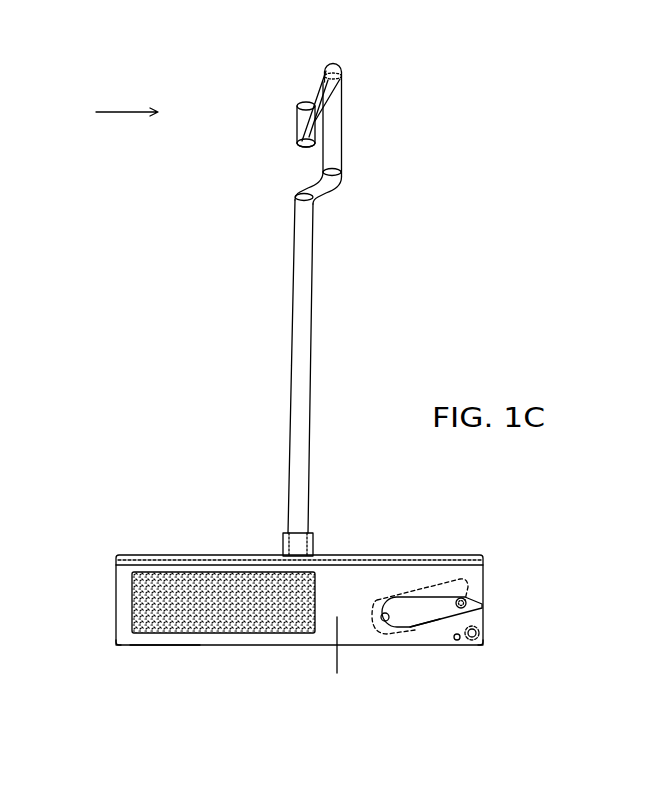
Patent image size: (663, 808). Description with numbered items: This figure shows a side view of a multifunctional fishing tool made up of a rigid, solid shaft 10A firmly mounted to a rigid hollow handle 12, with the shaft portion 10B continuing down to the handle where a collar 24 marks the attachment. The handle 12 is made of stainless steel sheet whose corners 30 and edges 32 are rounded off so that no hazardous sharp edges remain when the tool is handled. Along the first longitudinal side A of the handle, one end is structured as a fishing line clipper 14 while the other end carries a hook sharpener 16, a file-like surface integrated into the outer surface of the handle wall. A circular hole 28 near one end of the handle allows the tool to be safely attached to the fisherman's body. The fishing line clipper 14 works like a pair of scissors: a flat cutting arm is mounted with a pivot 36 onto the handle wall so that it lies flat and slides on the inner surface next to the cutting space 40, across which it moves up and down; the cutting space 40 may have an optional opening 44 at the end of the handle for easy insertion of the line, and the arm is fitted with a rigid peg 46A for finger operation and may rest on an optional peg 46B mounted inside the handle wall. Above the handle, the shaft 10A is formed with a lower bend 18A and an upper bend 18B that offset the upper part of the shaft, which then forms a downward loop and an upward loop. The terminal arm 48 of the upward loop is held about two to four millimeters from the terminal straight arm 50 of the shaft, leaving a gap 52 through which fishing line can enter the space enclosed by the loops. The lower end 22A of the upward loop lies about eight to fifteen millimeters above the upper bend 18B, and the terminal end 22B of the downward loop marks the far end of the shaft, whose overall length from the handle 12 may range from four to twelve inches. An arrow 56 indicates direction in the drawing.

The shaft 10A is at (302, 263).
The lower shaft portion 10B is at (298, 430).
The handle 12 is at (162, 528).
The fishing line clipper 14 is at (401, 573).
The hook sharpener 16 is at (242, 610).
The bend 18A is at (297, 194).
The upper bend 18B is at (338, 167).
The lower end of the upward loop 22A is at (303, 142).
The terminal end of the downward loop 22B is at (336, 63).
The shaft collar 24 is at (283, 541).
The circular hole 28 is at (484, 635).
The corners 30 is at (115, 644).
The edges 32 is at (163, 645).
The pivot 36 is at (383, 621).
The cutting space 40 is at (448, 620).
The opening 44 is at (476, 613).
The peg 46A is at (464, 602).
The peg 46B is at (457, 641).
The terminal arm 48 is at (298, 115).
The terminal straight arm 50 is at (338, 117).
The gap 52 is at (315, 100).
The direction of motion arrow 56 is at (110, 114).
The side A is at (337, 660).